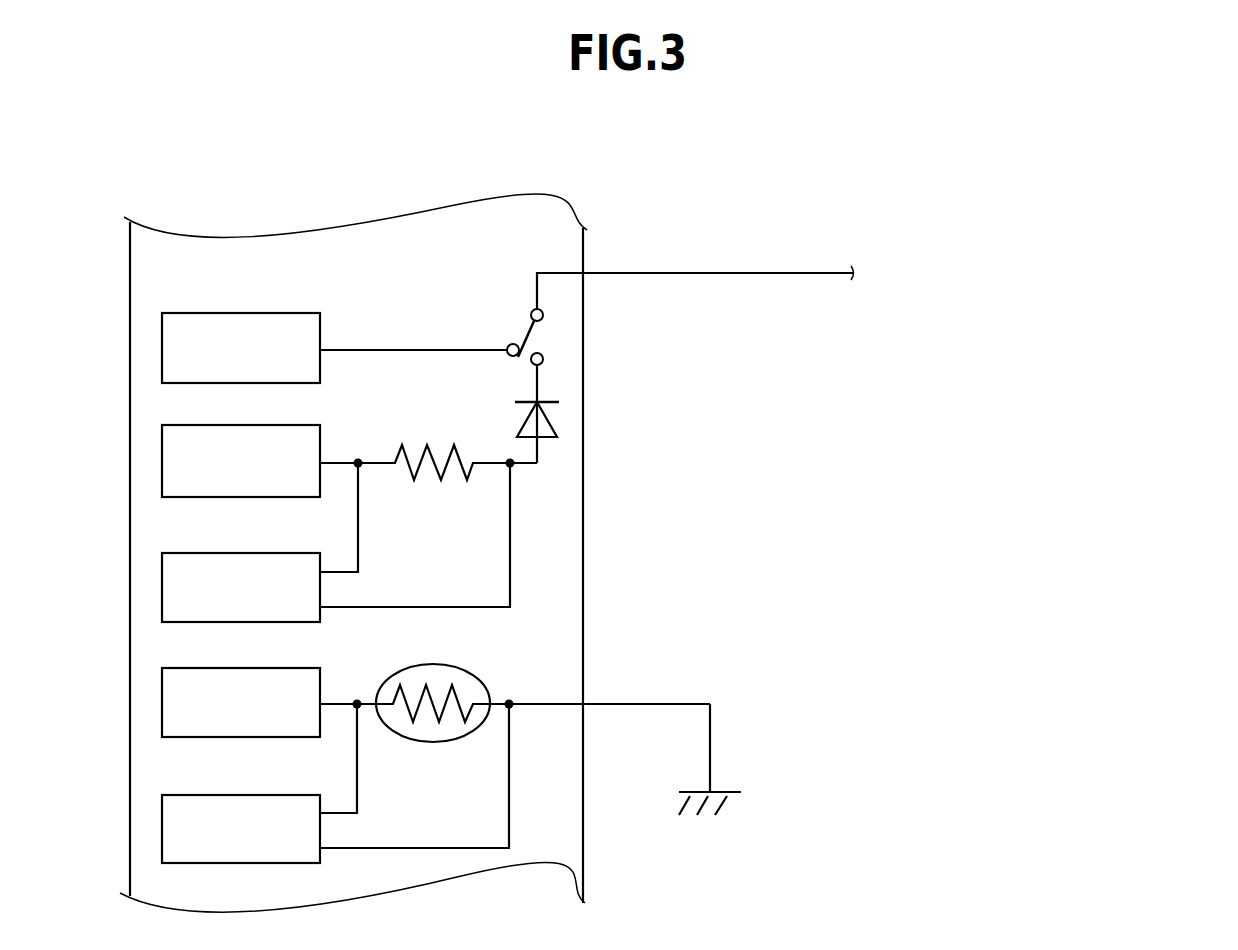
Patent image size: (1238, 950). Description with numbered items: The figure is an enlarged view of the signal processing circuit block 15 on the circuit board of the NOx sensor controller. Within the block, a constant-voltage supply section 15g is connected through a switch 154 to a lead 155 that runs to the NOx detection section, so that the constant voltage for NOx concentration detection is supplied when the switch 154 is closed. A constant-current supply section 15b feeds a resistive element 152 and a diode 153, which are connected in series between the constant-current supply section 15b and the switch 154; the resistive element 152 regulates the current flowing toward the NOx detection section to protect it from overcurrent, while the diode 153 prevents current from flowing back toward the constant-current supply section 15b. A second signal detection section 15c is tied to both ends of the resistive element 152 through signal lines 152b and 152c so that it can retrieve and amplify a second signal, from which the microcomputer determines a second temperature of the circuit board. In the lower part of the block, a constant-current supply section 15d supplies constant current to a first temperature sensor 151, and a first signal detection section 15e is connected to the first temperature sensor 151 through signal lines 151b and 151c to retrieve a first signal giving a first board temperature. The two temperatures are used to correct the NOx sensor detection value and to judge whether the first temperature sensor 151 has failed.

The signal processing circuit block 15 is at (130, 249).
The constant-voltage supply section 15g is at (162, 350).
The constant-current supply section 15b is at (162, 462).
The second signal detection section 15c is at (162, 590).
The constant-current supply section 15d is at (162, 703).
The first signal detection section 15e is at (162, 832).
The resistive element 152 is at (414, 452).
The signal line 152b is at (510, 540).
The signal line 152c is at (358, 525).
The diode 153 is at (546, 416).
The switch 154 is at (520, 346).
The lead 155 is at (693, 272).
The first temperature sensor 151 is at (472, 674).
The signal line 151b is at (437, 850).
The signal line 151c is at (357, 765).